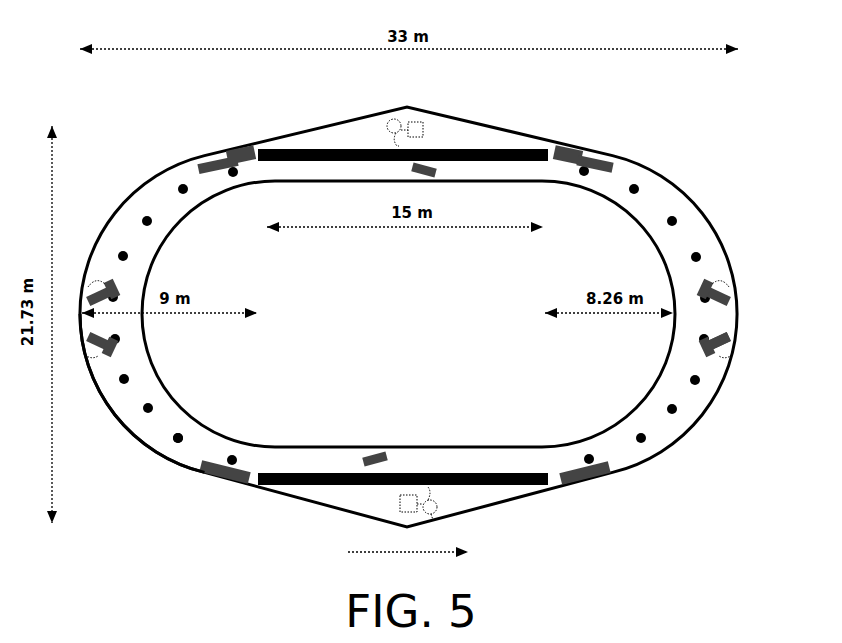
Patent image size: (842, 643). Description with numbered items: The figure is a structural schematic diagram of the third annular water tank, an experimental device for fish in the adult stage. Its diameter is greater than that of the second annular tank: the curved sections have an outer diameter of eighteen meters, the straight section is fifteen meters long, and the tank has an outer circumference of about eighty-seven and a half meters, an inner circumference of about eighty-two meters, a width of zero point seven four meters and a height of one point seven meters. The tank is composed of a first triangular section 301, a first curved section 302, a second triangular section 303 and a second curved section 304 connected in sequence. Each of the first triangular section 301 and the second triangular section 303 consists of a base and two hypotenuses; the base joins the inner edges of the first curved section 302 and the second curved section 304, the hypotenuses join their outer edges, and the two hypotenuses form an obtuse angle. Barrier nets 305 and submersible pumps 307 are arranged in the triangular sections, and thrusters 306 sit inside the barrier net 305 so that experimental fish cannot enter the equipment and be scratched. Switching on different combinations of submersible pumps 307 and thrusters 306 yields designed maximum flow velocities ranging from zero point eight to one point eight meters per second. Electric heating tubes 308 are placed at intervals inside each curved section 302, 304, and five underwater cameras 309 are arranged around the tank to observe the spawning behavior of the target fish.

The first triangular section 301 is at (525, 136).
The first curved section 302 is at (707, 393).
The second triangular section 303 is at (298, 490).
The second curved section 304 is at (103, 383).
The barrier net 305 is at (282, 148).
The thruster 306 is at (428, 131).
The submersible pump 307 is at (590, 490).
The electric heating tube 308 is at (183, 432).
The underwater camera 309 is at (733, 339).